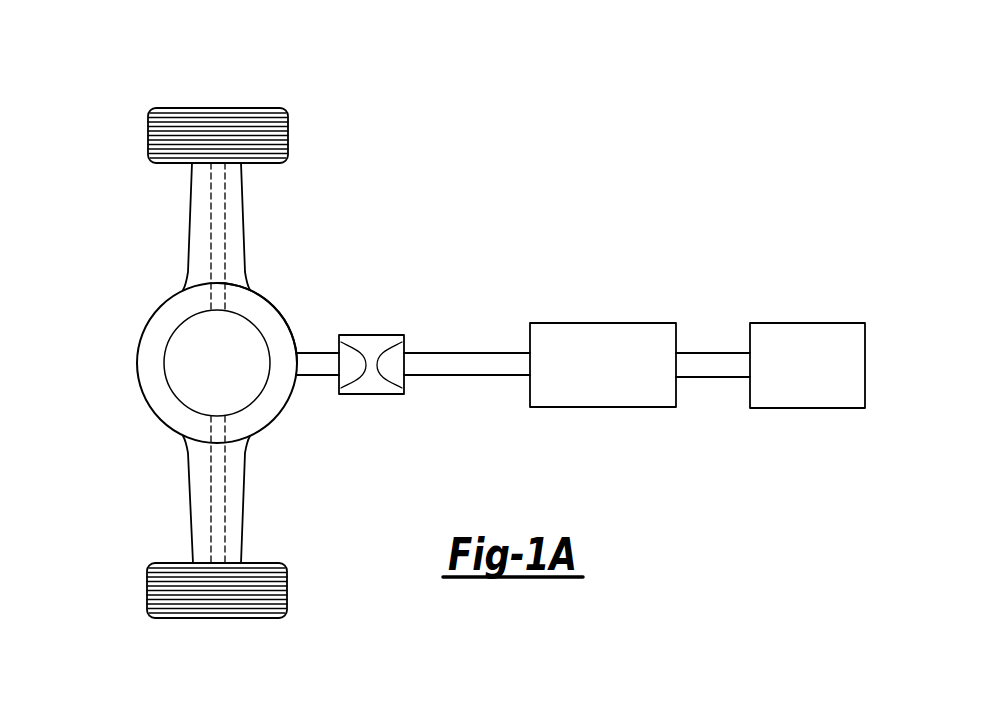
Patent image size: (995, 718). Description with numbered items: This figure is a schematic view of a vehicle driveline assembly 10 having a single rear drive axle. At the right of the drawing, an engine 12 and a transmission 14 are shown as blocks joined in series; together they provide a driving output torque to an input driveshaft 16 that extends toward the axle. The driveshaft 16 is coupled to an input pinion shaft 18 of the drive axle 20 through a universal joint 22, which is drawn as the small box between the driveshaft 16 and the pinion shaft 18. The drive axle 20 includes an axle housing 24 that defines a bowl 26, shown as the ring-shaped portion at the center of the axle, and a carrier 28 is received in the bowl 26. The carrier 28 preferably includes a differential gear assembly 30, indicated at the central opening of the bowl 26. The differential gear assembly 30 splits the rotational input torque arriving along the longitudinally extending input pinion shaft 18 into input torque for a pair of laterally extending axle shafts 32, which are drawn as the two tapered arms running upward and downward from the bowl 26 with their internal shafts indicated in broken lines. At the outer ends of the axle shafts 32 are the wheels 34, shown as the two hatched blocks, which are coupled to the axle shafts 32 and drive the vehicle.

The vehicle driveline assembly 10 is at (620, 262).
The engine 12 is at (817, 378).
The transmission 14 is at (612, 378).
The input driveshaft 16 is at (460, 358).
The input pinion shaft 18 is at (312, 366).
The drive axle 20 is at (137, 243).
The universal joint 22 is at (375, 395).
The axle housing 24 is at (247, 493).
The bowl 26 is at (150, 392).
The carrier 28 is at (270, 303).
The differential gear assembly 30 is at (183, 343).
The axle shafts 32 is at (217, 225).
The wheels 34 is at (250, 118).